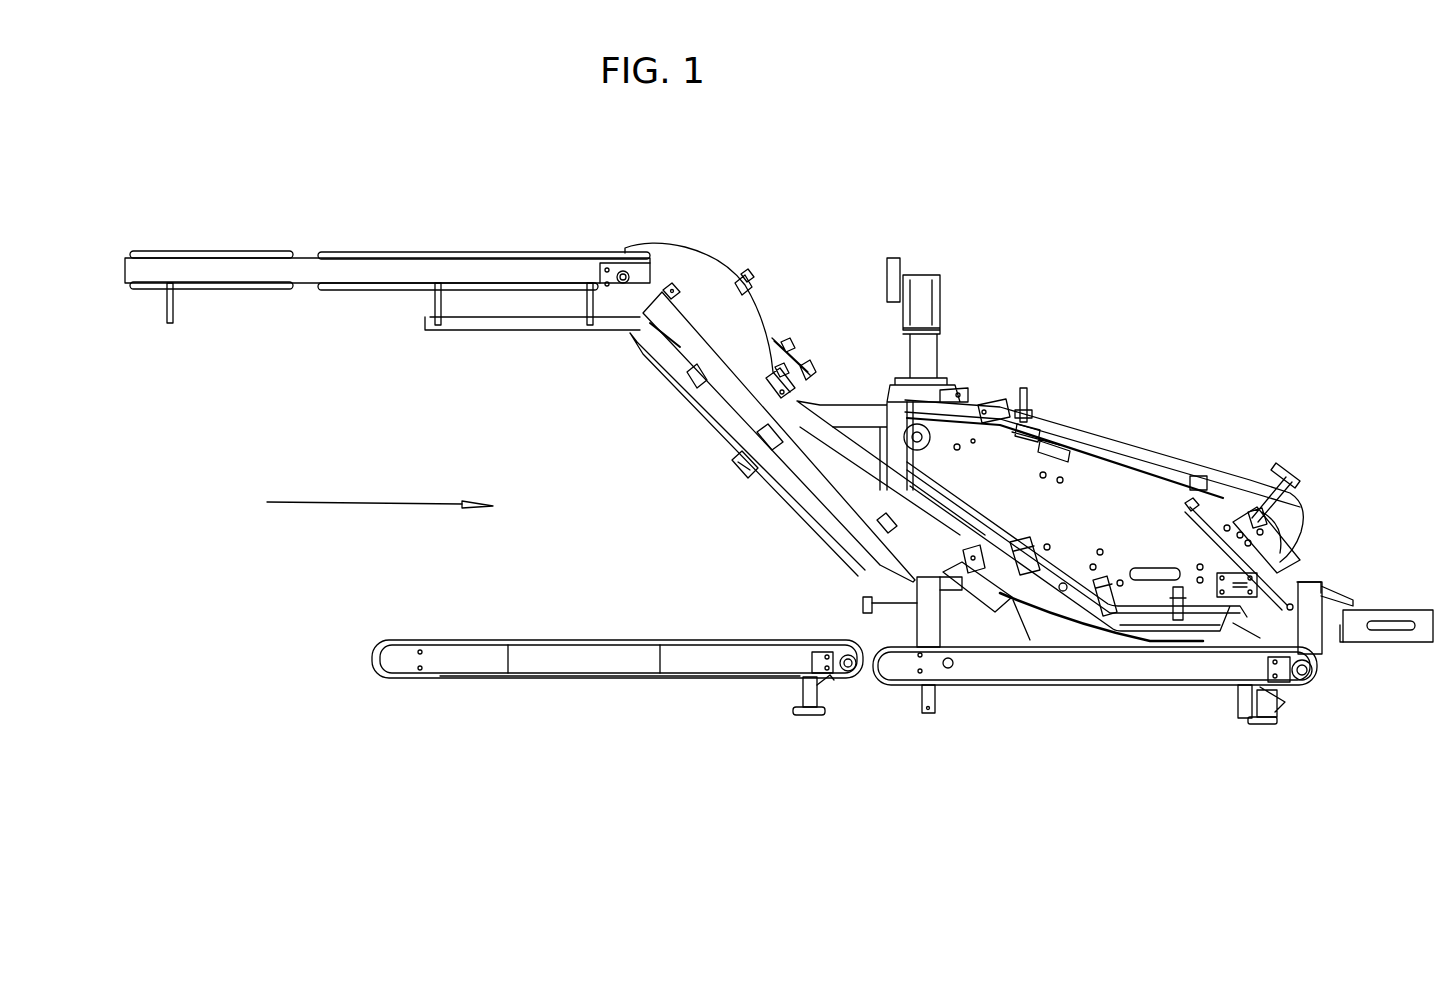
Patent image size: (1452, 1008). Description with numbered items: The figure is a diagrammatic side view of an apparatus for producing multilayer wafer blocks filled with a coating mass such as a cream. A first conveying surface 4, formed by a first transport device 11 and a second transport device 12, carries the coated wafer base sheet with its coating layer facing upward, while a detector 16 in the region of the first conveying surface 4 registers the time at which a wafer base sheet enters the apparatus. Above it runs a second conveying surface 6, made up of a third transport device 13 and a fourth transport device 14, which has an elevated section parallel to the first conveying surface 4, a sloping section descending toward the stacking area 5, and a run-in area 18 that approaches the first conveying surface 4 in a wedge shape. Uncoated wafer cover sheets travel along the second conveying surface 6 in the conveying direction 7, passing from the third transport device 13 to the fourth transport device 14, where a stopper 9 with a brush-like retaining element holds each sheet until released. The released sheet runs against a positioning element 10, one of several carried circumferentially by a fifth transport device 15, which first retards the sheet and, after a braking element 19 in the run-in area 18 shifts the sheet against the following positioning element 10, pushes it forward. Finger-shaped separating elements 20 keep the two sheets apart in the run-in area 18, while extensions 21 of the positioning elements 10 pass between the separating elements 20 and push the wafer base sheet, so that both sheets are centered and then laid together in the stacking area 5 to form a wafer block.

The first conveying surface 4 is at (542, 648).
The stacking area 5 is at (1282, 697).
The second conveying surface 6 is at (242, 255).
The conveying direction 7 is at (330, 506).
The stopper 9 is at (732, 468).
The positioning element 10 is at (1045, 407).
The first transport device 11 is at (1045, 667).
The second transport device 12 is at (763, 660).
The third transport device 13 is at (395, 255).
The fourth transport device 14 is at (728, 391).
The fifth transport device 15 is at (1100, 510).
The detector 16 is at (863, 605).
The run-in area 18 is at (1163, 648).
The braking element 19 is at (1117, 635).
The separating element 20 is at (1200, 652).
The extension 21 is at (1048, 598).